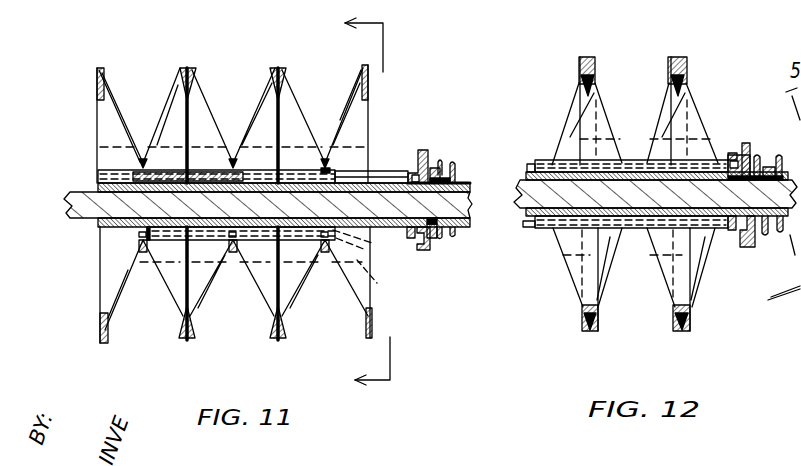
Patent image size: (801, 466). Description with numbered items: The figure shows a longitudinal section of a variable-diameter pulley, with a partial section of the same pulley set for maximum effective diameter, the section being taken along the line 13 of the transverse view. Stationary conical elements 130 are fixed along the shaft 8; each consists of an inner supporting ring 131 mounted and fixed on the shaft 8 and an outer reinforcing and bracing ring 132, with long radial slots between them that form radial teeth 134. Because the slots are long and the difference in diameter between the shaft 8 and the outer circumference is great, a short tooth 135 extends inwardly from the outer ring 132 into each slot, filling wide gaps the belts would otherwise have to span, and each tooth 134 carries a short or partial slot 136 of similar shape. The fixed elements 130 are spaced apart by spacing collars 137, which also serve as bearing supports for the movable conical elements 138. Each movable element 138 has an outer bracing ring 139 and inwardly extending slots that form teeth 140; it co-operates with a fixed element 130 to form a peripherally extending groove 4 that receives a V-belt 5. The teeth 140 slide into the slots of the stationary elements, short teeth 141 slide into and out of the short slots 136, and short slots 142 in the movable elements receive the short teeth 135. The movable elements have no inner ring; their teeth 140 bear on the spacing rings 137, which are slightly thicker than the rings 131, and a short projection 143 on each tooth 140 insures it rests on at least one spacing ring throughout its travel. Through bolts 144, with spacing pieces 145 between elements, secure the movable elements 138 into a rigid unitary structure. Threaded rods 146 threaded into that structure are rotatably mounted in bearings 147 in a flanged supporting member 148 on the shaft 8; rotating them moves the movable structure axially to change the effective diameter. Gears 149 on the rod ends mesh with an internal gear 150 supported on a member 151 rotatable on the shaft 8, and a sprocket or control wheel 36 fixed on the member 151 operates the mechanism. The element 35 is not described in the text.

In FIG. 11, the peripherally extending grooves 4 is at (220, 100).
In FIG. 11, the V-belts 5 is at (327, 162).
In FIG. 12, the V-belts 5 is at (668, 57).
In FIG. 11, the shaft 8 is at (80, 192).
In FIG. 12, the shaft 8 is at (655, 194).
In FIG. 11, the section line 13— 13 is at (348, 204).
In FIG. 11, the retaining washer 35 is at (453, 163).
In FIG. 11, the sprocket or control wheel 36 is at (440, 162).
In FIG. 11, the stationary conical element 130 is at (360, 317).
In FIG. 12, the stationary conical element 130 is at (692, 331).
In FIG. 11, the inner supporting ring 131 is at (340, 186).
In FIG. 12, the inner supporting ring 131 is at (660, 215).
In FIG. 11, the outer reinforcing and bracing ring 132 is at (373, 322).
In FIG. 12, the outer reinforcing and bracing ring 132 is at (688, 72).
In FIG. 11, the radial teeth 134 is at (358, 137).
In FIG. 11, the short tooth 135 is at (366, 108).
In FIG. 12, the short tooth 135 is at (662, 133).
In FIG. 11, the short or partial slots 136 is at (381, 280).
In FIG. 11, the spacing collars 137 is at (215, 186).
In FIG. 11, the movable conical element 138 is at (197, 336).
In FIG. 11, the outer bracing ring 139 is at (97, 75).
In FIG. 12, the outer bracing ring 139 is at (578, 77).
In FIG. 11, the teeth 140 is at (113, 119).
In FIG. 11, the short teeth 141 is at (117, 283).
In FIG. 12, the short teeth 141 is at (606, 258).
In FIG. 11, the short slots 142 is at (117, 146).
In FIG. 12, the short slots 142 is at (603, 132).
In FIG. 11, the short projection 143 is at (241, 214).
In FIG. 12, the short projection 143 is at (726, 160).
In FIG. 11, the through bolts 144 is at (368, 247).
In FIG. 12, the through bolts 144 is at (616, 240).
In FIG. 11, the spacing pieces 145 is at (256, 170).
In FIG. 12, the spacing pieces 145 is at (652, 162).
In FIG. 11, the threaded rods 146 is at (377, 168).
In FIG. 12, the threaded rods 146 is at (528, 164).
In FIG. 11, the bearings 147 is at (431, 197).
In FIG. 11, the flanged supporting member 148 is at (435, 238).
In FIG. 11, the gears 149 is at (416, 163).
In FIG. 11, the internal gear 150 is at (420, 254).
In FIG. 11, the member 151 is at (445, 206).